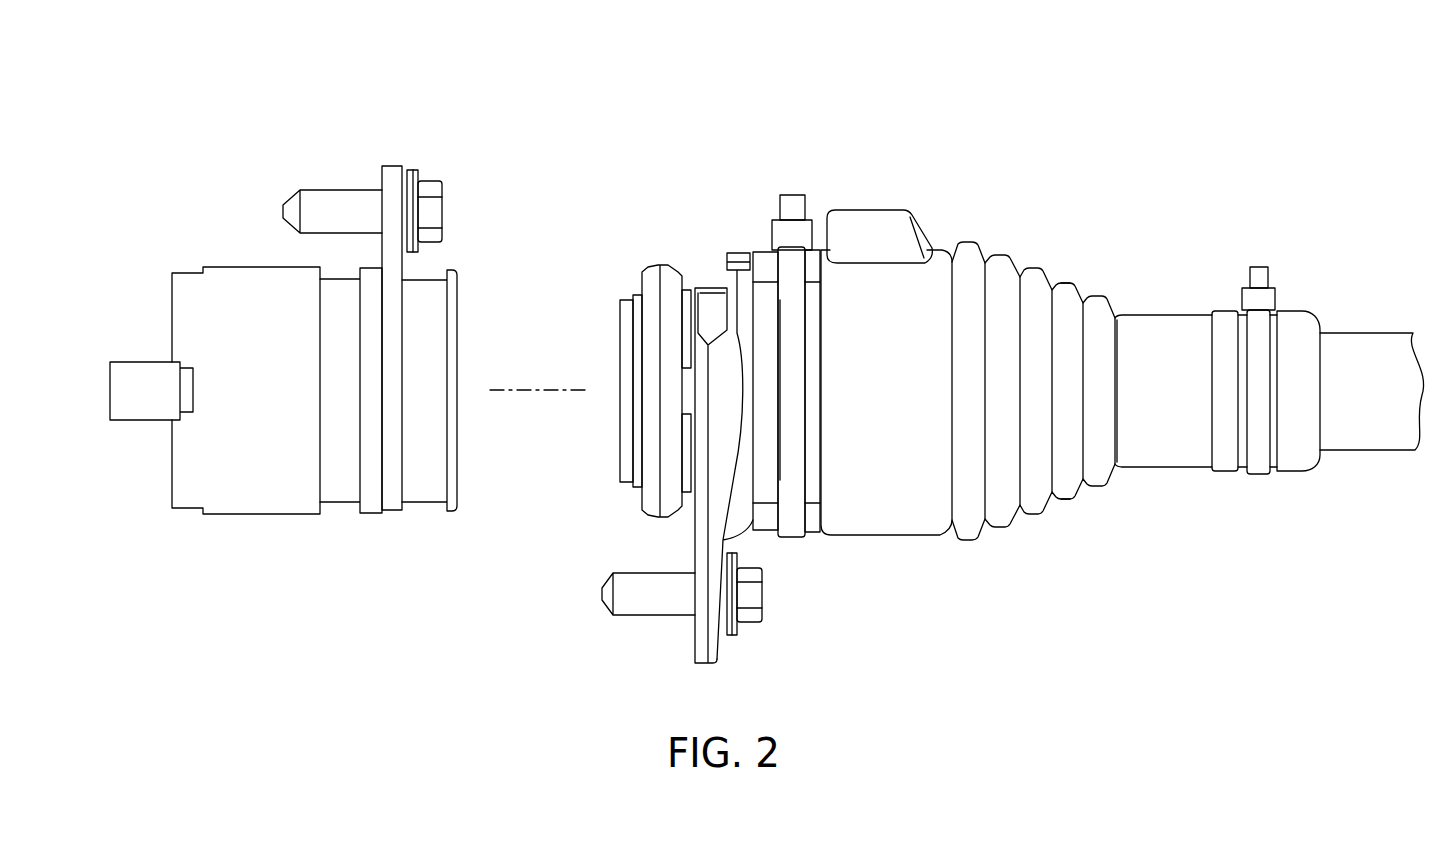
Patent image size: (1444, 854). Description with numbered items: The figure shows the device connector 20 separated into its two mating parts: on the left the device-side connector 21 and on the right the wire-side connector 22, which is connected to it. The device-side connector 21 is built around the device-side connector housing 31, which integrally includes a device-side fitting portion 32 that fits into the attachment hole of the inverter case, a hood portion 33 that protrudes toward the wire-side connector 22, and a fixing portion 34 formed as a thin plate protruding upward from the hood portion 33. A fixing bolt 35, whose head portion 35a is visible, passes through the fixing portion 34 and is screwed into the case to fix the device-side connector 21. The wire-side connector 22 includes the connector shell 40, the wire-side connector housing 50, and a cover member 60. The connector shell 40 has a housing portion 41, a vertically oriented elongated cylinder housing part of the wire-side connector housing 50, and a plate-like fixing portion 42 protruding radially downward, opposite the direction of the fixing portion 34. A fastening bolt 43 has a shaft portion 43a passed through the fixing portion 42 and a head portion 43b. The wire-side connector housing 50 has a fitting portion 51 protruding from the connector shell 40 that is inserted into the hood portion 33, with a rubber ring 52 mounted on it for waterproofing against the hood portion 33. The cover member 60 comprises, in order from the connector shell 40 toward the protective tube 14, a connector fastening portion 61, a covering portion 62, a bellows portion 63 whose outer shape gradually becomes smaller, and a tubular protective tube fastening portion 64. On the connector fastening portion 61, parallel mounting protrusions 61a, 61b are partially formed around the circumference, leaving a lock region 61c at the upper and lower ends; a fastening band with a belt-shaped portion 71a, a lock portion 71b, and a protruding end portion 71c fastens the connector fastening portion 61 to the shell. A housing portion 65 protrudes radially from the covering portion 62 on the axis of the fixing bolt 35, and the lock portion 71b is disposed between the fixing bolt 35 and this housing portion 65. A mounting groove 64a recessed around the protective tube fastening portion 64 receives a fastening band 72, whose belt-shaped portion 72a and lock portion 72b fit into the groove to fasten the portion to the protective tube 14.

The protective tube 14 is at (1387, 333).
The device connector 20 is at (585, 40).
The device-side connector 21 is at (503, 100).
The wire-side connector 22 is at (578, 100).
The device-side connector housing 31 is at (430, 572).
The device-side fitting portion 32 is at (349, 503).
The hood portion 33 is at (423, 503).
The fixing portion 34 is at (395, 165).
The fixing bolt 35 is at (427, 178).
The head portion 35a is at (435, 207).
The connector shell 40 is at (613, 508).
The housing portion 41 is at (727, 487).
The fixing portion 42 is at (700, 558).
The fastening bolt 43 is at (763, 583).
The shaft portion 43a is at (643, 622).
The head portion 43b is at (750, 624).
The wire-side connector housing 50 is at (657, 208).
The fitting portion 51 is at (627, 300).
The rubber ring 52 is at (652, 267).
The cover member 60 is at (1020, 270).
The connector fastening portion 61 is at (745, 250).
The mounting protrusion 61a is at (765, 452).
The mounting protrusion 61b is at (808, 398).
The lock region 61c is at (762, 260).
The covering portion 62 is at (907, 537).
The bellows portion 63 is at (1078, 500).
The protective tube fastening portion 64 is at (1168, 468).
The mounting groove 64a is at (1240, 473).
The housing portion 65 is at (928, 214).
The belt-shaped portion 71a is at (790, 345).
The lock portion 71b is at (820, 243).
The end portion 71c is at (792, 195).
The fastening band 72 is at (1358, 225).
The belt-shaped portion 72a is at (1265, 328).
The lock portion 72b is at (1278, 297).